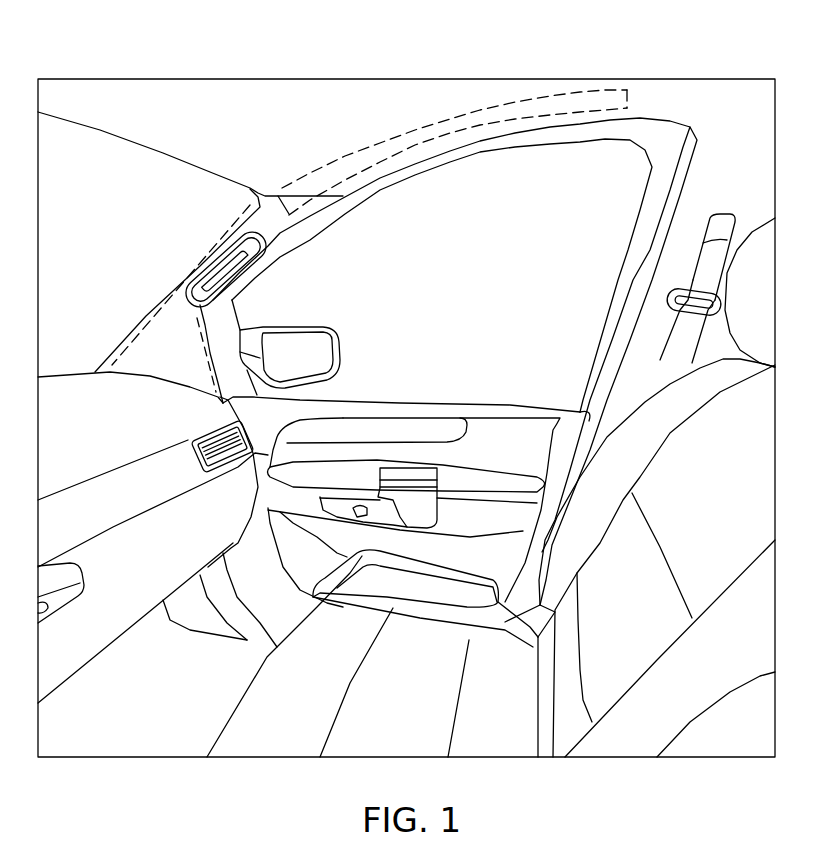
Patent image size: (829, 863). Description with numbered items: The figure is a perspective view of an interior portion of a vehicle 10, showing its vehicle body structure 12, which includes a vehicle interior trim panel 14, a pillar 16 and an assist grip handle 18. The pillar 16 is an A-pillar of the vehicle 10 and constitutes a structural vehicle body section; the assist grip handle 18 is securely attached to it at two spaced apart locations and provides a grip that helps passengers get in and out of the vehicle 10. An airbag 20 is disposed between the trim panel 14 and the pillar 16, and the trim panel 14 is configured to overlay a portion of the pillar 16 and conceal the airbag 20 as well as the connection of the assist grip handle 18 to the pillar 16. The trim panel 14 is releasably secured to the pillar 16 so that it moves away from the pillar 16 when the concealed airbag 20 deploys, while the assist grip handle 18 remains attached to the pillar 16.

The vehicle 10 is at (721, 72).
The vehicle body structure 12 is at (300, 252).
The vehicle interior trim panel 14 is at (320, 216).
The pillar 16 is at (169, 298).
The assist grip handle 18 is at (254, 296).
The airbag 20 is at (344, 148).